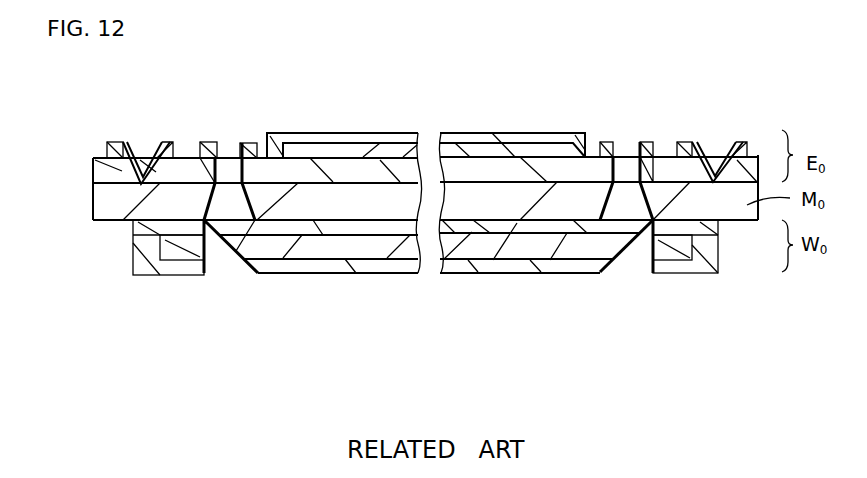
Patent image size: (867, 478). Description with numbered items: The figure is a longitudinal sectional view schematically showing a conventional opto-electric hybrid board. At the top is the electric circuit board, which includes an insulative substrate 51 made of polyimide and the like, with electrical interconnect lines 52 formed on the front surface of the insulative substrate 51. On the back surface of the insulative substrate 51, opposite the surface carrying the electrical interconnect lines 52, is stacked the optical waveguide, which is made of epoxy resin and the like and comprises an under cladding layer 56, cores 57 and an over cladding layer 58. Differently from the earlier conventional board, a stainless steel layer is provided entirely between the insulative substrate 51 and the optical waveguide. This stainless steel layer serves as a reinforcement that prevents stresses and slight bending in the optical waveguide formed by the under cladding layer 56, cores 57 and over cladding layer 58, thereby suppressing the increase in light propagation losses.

The insulative substrate 51 is at (349, 169).
The electrical interconnect lines 52 is at (467, 150).
The under cladding layer 56 is at (446, 266).
The cores 57 is at (533, 247).
The over cladding layer 58 is at (585, 265).